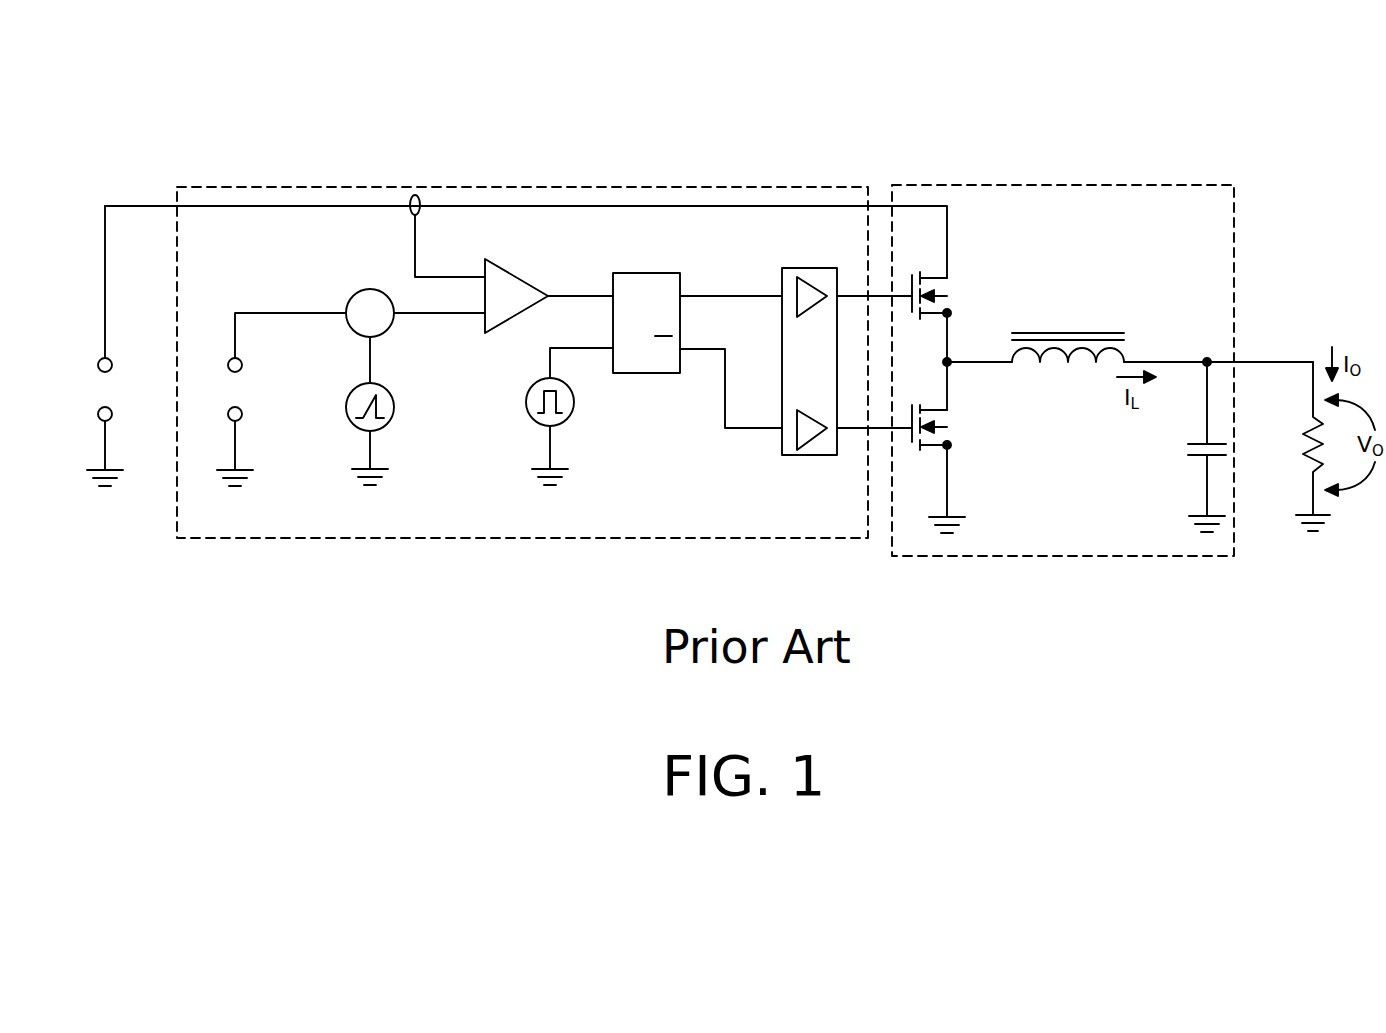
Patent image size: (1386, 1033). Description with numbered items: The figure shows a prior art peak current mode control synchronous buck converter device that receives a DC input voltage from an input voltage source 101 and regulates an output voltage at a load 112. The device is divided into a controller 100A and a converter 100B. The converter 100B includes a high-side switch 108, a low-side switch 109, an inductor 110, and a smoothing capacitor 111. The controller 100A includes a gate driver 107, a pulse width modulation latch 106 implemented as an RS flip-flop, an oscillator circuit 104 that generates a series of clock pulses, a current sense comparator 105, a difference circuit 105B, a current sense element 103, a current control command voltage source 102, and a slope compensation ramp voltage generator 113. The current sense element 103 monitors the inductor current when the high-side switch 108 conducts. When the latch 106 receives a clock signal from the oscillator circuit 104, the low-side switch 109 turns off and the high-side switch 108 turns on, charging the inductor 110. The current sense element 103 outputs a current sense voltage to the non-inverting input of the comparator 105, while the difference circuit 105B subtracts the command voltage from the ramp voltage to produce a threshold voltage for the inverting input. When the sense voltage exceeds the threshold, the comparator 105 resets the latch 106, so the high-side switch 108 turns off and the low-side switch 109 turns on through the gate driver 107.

The controller 100A is at (205, 187).
The converter 100B is at (950, 185).
The input voltage source 101 is at (99, 361).
The current control command voltage source 102 is at (228, 364).
The current sense element 103 is at (410, 211).
The oscillator circuit 104 is at (531, 419).
The current sense comparator 105 is at (528, 283).
The difference circuit 105B is at (348, 296).
The pulse width modulation latch 106 is at (655, 374).
The gate driver 107 is at (808, 456).
The high-side switch 108 is at (951, 292).
The low-side switch 109 is at (951, 424).
The inductor 110 is at (1100, 333).
The smoothing capacitor 111 is at (1186, 450).
The load 112 is at (1303, 447).
The slope compensation ramp voltage generator 113 is at (347, 419).